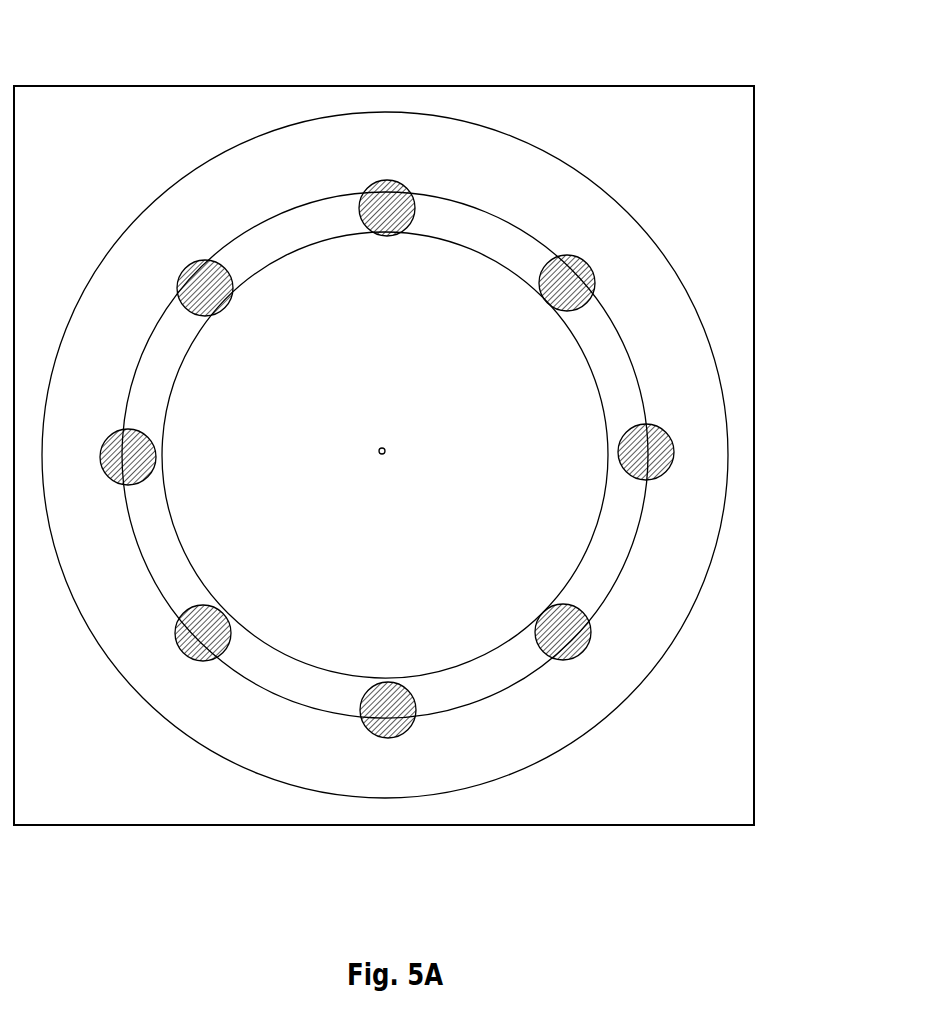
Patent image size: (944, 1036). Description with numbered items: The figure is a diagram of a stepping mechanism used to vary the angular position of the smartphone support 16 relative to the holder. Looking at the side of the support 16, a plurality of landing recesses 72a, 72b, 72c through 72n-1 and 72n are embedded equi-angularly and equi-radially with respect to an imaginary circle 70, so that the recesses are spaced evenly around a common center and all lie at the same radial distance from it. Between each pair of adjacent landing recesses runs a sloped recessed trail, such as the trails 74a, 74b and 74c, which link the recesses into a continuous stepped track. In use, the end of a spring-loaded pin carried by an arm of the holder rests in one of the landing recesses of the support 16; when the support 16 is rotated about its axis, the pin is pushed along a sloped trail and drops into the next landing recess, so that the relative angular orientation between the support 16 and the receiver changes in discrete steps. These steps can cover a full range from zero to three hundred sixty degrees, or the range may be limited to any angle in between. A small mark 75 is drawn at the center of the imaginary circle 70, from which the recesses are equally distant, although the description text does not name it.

The support 16 is at (205, 828).
The imaginary circle 70 is at (588, 175).
The landing recess 72a is at (575, 270).
The landing recess 72b is at (650, 447).
The landing recess 72c is at (568, 645).
The landing recess 72n is at (382, 195).
The landing recess 72n-1 is at (203, 270).
The sloped recessed trail 74a is at (468, 212).
The sloped recessed trail 74b is at (613, 349).
The sloped recessed trail 74c is at (623, 542).
The center point 75 is at (384, 455).